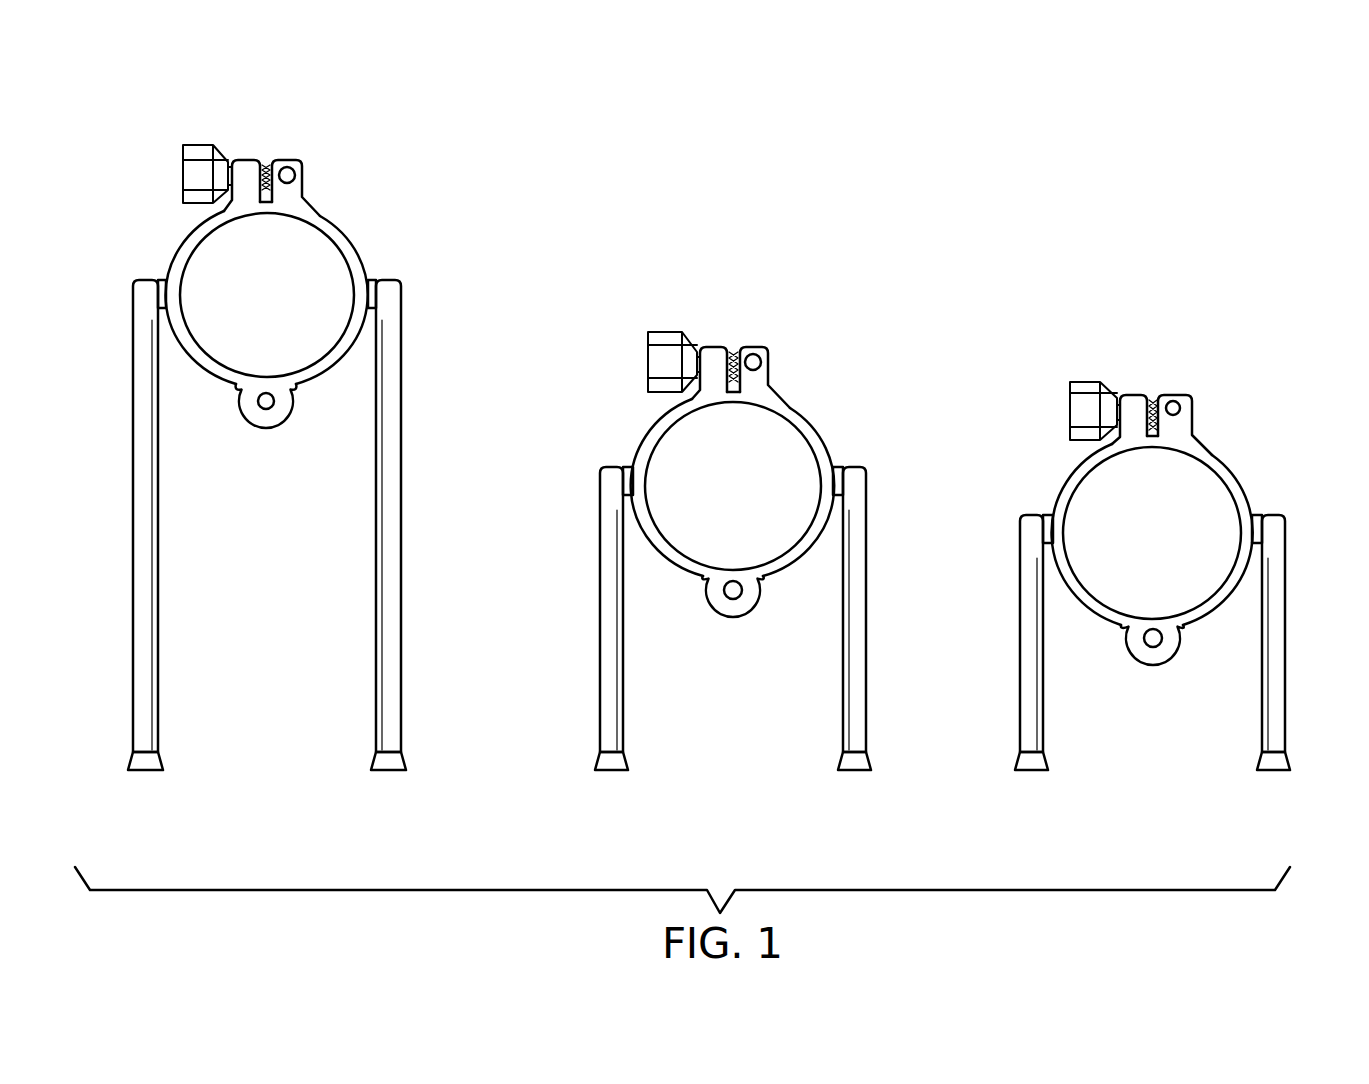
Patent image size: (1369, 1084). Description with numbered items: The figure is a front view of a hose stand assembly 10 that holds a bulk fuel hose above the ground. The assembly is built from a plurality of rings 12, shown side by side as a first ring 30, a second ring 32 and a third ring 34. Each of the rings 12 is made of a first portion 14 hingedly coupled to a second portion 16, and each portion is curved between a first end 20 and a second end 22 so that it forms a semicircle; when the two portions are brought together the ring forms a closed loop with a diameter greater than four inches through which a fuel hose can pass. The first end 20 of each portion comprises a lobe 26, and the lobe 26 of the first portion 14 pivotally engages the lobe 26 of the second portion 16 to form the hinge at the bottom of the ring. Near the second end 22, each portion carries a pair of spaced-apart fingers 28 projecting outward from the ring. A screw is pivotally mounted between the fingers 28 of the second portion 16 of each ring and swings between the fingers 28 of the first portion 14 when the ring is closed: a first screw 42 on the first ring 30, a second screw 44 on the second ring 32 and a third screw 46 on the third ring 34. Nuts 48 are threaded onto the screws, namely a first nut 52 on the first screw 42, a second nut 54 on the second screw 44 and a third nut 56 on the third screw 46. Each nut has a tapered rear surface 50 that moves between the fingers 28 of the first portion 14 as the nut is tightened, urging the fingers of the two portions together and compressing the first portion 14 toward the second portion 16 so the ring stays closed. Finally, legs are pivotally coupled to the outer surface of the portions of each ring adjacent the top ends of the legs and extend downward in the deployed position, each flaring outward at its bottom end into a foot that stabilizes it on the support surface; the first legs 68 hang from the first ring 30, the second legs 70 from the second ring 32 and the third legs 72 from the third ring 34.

The hose stand assembly 10 is at (1074, 186).
The rings 12 is at (334, 210).
The first portion 14 is at (169, 239).
The second portion 16 is at (362, 243).
The first end 20 is at (265, 167).
The second end 22 is at (240, 393).
The lobe 26 is at (284, 423).
The fingers 28 is at (707, 345).
The first ring 30 is at (322, 185).
The second ring 32 is at (784, 353).
The third ring 34 is at (1215, 420).
The first screw 42 is at (268, 165).
The second screw 44 is at (740, 348).
The third screw 46 is at (1153, 398).
The nuts 48 is at (197, 140).
The rear surface 50 is at (224, 165).
The first nut 52 is at (183, 177).
The second nut 54 is at (648, 355).
The third nut 56 is at (1070, 392).
The first legs 68 is at (133, 549).
The second legs 70 is at (600, 648).
The third legs 72 is at (1020, 632).